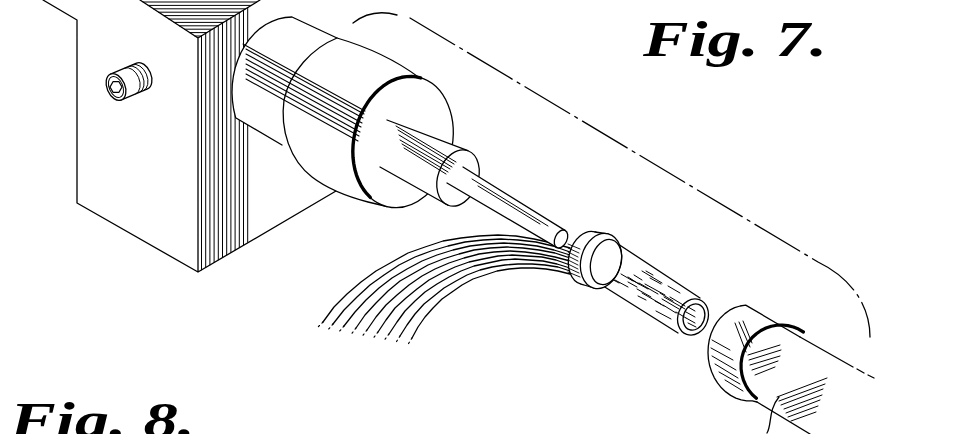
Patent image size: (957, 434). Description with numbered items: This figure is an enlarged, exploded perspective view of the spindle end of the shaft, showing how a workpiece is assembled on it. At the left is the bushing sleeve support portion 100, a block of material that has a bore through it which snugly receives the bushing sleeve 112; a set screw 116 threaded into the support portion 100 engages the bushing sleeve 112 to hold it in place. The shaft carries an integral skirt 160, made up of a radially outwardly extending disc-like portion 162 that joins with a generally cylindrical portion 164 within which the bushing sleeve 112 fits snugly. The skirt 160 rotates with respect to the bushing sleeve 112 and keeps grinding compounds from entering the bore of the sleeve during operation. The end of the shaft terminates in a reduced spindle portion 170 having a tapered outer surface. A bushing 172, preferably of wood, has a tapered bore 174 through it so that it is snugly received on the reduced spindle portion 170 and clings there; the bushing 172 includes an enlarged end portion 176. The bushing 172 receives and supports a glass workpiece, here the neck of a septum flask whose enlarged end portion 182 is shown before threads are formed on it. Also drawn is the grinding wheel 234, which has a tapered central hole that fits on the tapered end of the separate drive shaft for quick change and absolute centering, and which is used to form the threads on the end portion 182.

The bushing sleeve support portion 100 is at (175, 242).
The bushing sleeve 112 is at (269, 127).
The set screw 116 is at (146, 103).
The skirt 160 is at (447, 88).
The disc-like portion 162 is at (383, 195).
The generally cylindrical portion 164 is at (321, 178).
The reduced spindle portion 170 is at (500, 194).
The bushing 172 is at (674, 306).
The tapered bore 174 is at (687, 333).
The enlarged end portion 176 is at (600, 233).
The enlarged end portion 182 is at (733, 376).
The grinding wheel 234 is at (410, 338).